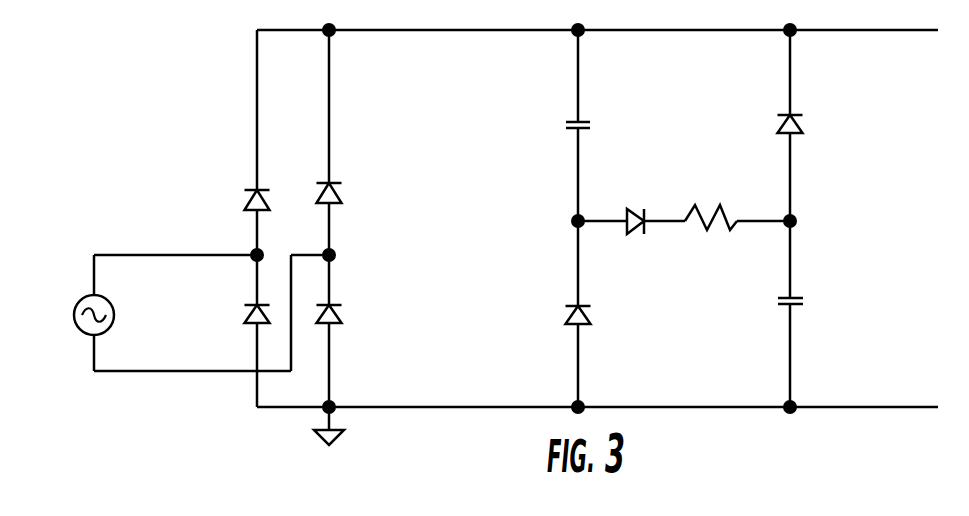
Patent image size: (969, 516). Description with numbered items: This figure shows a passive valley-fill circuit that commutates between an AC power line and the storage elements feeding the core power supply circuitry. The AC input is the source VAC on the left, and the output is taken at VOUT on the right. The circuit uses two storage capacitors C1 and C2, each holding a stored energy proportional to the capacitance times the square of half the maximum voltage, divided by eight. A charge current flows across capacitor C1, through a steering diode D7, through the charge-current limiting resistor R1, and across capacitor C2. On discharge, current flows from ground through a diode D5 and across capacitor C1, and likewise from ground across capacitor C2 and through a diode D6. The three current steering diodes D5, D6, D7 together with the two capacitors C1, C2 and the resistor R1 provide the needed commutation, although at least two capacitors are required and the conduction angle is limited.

The capacitor C1 is at (571, 110).
The capacitor C2 is at (781, 283).
The diode D5 is at (570, 299).
The diode D6 is at (783, 113).
The diode D7 is at (634, 209).
The charge-current limiting resistor R1 is at (711, 205).
The AC voltage source VAC is at (73, 314).
The output voltage VOUT is at (900, 219).